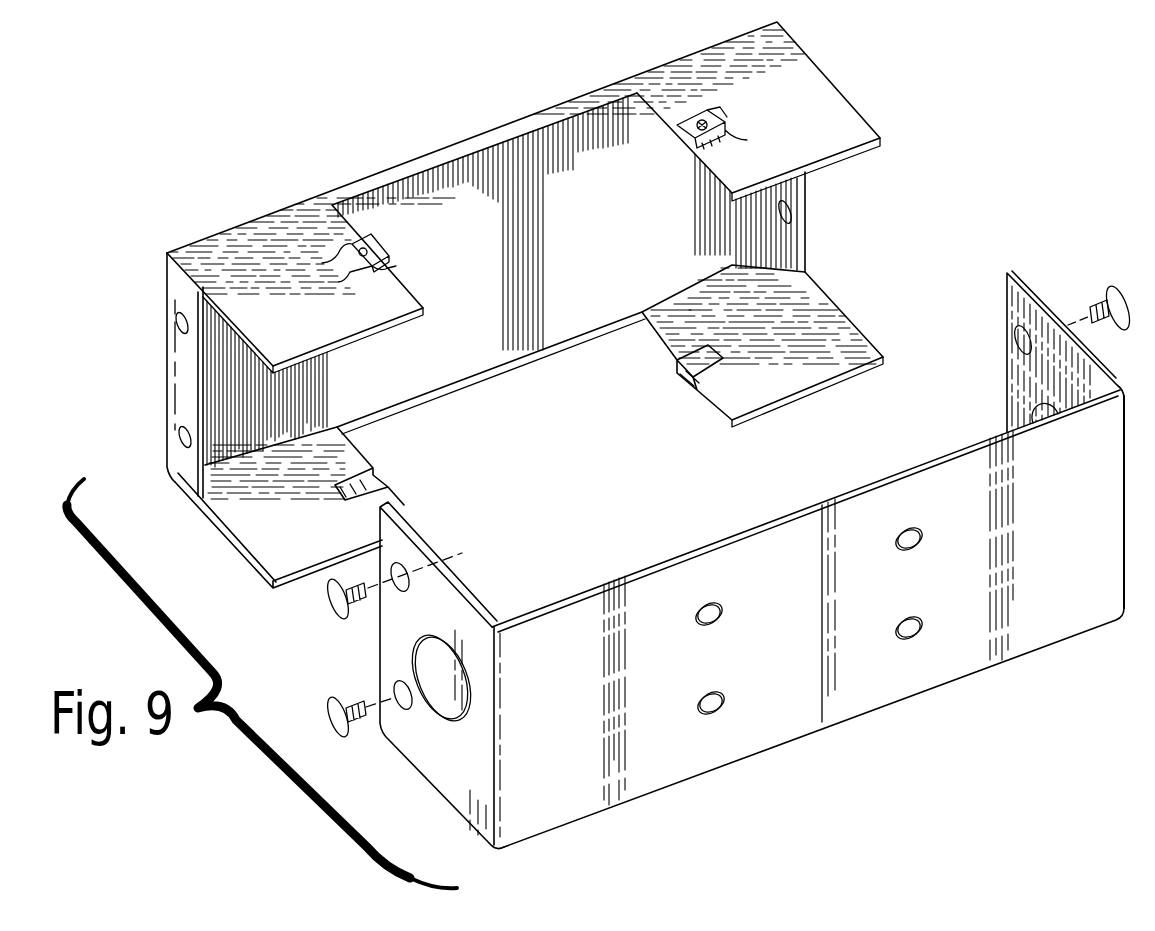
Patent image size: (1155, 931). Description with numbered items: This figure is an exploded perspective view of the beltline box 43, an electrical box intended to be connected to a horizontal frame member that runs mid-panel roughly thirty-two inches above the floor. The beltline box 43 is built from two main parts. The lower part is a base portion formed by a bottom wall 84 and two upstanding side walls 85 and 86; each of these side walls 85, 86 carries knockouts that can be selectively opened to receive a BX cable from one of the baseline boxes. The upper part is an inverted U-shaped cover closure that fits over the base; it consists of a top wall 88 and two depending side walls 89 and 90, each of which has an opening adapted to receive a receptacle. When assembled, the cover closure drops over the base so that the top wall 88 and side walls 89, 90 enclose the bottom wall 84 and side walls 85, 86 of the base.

The beltline box 43 is at (752, 548).
The bottom wall 84 is at (808, 618).
The side wall 85 is at (442, 675).
The side wall 86 is at (1043, 302).
The top wall 88 is at (525, 260).
The side wall 89 is at (289, 507).
The side wall 90 is at (738, 132).